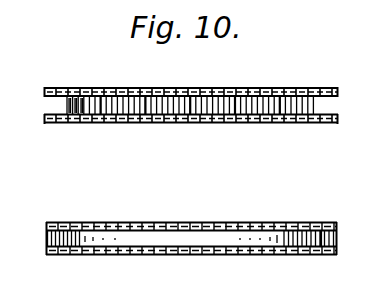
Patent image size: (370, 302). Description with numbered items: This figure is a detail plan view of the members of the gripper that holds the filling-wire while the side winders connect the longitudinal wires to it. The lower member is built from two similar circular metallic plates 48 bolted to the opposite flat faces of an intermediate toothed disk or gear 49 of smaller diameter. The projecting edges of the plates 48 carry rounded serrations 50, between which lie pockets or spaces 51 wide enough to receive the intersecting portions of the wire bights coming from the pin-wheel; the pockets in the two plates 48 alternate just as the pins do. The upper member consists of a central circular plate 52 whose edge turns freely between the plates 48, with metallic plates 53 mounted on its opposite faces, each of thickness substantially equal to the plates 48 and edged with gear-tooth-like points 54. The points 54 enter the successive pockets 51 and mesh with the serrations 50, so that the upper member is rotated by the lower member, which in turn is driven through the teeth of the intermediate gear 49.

The metallic plates 48 is at (212, 88).
The intermediate toothed disk or gear 49 is at (107, 122).
The rounded serrations 50 is at (163, 90).
The pockets or spaces 51 is at (82, 90).
The central circular plate 52 is at (97, 240).
The metallic plates 53 is at (332, 208).
The points 54 is at (188, 223).